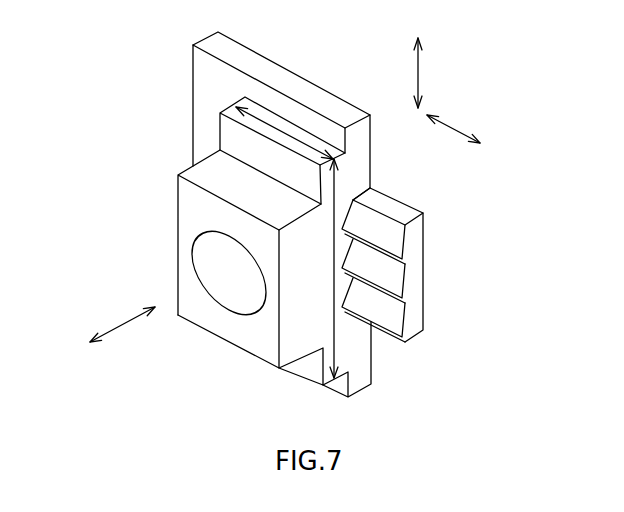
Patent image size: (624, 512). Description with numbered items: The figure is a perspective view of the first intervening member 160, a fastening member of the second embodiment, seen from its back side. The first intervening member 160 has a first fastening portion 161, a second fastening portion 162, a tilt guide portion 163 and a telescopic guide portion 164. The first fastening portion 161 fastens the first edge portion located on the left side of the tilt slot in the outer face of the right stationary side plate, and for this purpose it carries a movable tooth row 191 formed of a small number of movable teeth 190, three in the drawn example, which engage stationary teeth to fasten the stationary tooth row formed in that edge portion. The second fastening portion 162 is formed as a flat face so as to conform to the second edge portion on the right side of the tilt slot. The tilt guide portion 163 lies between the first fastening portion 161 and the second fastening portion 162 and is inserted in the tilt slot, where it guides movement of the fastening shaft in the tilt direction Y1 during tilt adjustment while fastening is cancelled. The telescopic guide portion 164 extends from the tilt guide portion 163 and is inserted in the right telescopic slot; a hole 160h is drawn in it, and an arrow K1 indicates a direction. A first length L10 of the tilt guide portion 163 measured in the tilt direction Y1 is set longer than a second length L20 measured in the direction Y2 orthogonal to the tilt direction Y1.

The first intervening member 160 is at (334, 94).
The hole 160h is at (233, 295).
The first fastening portion 161 is at (405, 213).
The second fastening portion 162 is at (203, 88).
The tilt guide portion 163 is at (232, 128).
The telescopic guide portion 164 is at (190, 200).
The movable teeth 190 is at (392, 239).
The movable tooth row 191 is at (378, 230).
The first length L10 is at (332, 342).
The second length L20 is at (292, 133).
The tilt direction Y1 is at (418, 73).
The direction orthogonal to the tilt direction Y2 is at (455, 125).
The K1 direction K1 is at (122, 323).